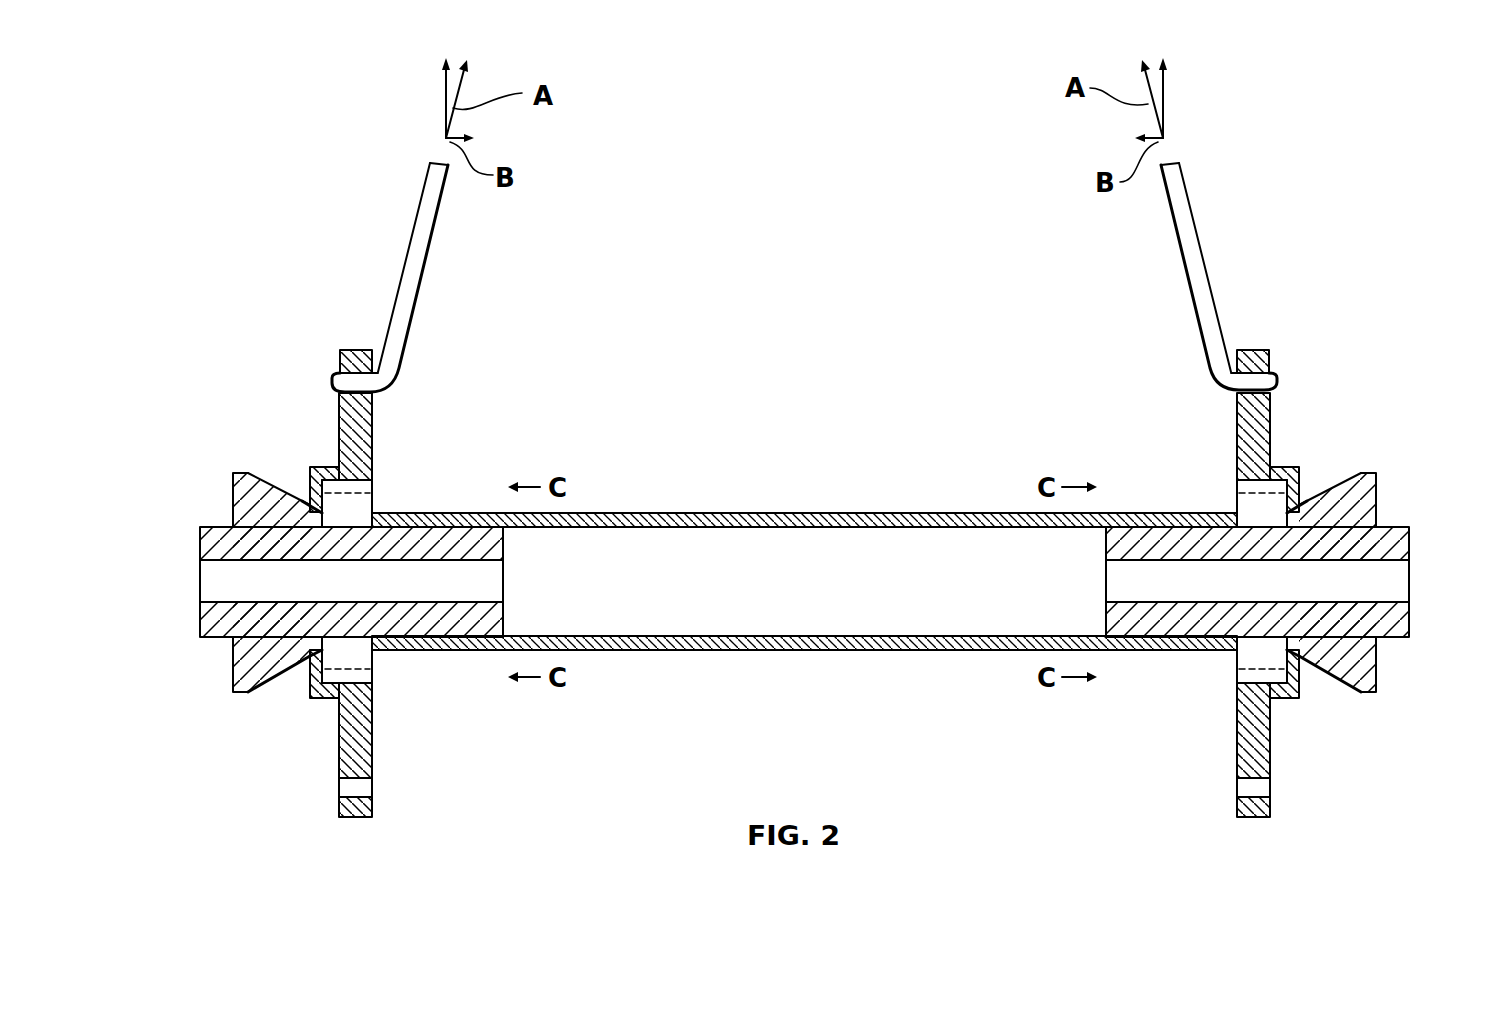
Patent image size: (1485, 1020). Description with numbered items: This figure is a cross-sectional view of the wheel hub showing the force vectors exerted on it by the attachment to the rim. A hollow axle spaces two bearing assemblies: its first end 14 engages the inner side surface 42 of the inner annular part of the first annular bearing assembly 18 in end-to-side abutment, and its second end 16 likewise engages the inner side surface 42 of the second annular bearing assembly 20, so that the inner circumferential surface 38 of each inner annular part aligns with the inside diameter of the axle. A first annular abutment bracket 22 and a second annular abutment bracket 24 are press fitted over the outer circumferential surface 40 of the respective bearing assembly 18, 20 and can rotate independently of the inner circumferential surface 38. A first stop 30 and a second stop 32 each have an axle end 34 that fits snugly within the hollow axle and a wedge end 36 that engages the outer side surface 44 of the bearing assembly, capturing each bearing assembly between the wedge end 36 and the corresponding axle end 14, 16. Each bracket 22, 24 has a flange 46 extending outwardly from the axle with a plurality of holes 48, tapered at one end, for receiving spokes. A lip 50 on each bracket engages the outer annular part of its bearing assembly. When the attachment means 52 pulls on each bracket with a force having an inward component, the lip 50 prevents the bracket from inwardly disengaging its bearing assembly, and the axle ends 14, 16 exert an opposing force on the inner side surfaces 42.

The first end 14 is at (427, 520).
The second end 16 is at (1237, 520).
The first annular bearing assembly 18 is at (325, 535).
The second annular bearing assembly 20 is at (1280, 540).
The first annular abutment bracket 22 is at (338, 422).
The second annular abutment bracket 24 is at (1270, 422).
The first stop 30 is at (233, 660).
The second stop 32 is at (1378, 680).
The axle end 34 is at (487, 622).
The wedge end 36 is at (228, 622).
The inner circumferential surface 38 is at (350, 527).
The outer circumferential surface 40 is at (336, 472).
The inner side surface 42 is at (372, 493).
The outer side surface 44 is at (305, 505).
The flange 46 is at (363, 430).
The holes 48 is at (345, 790).
The lip 50 is at (316, 500).
The attachment means 52 is at (427, 208).